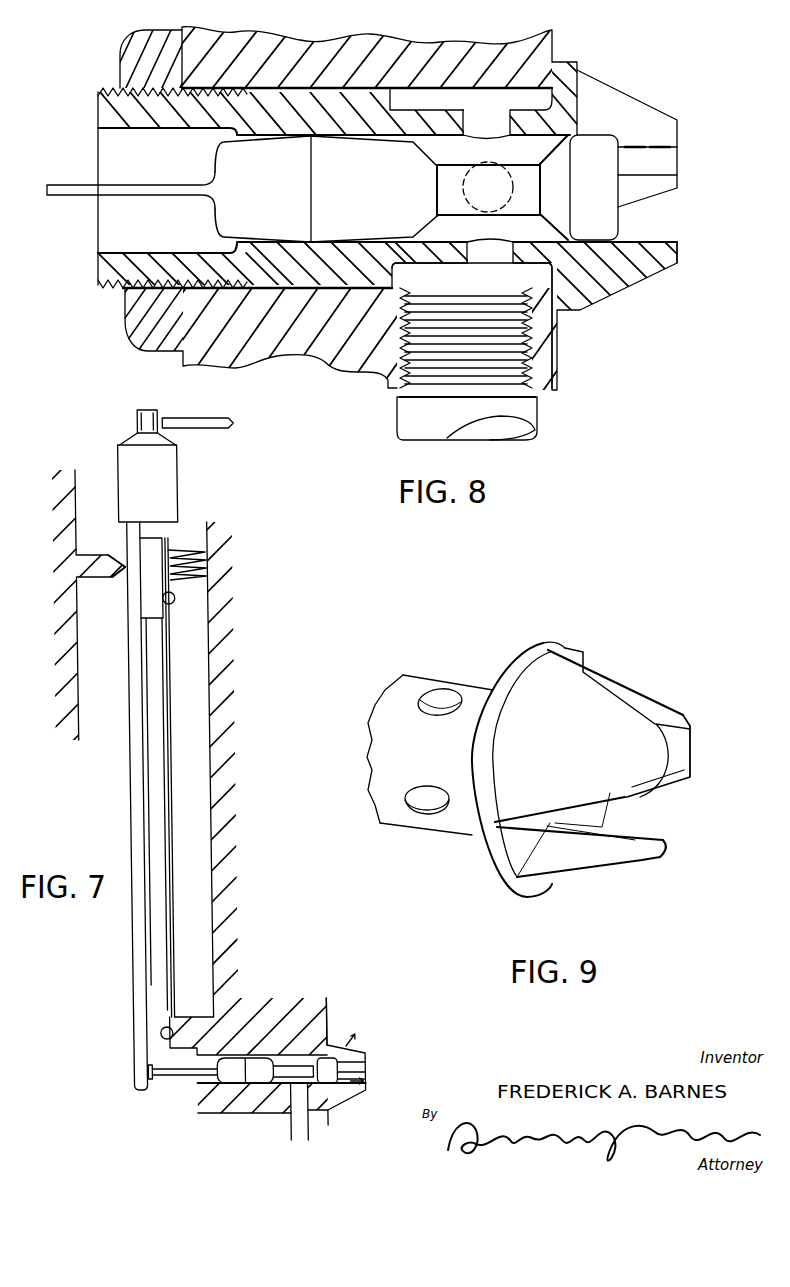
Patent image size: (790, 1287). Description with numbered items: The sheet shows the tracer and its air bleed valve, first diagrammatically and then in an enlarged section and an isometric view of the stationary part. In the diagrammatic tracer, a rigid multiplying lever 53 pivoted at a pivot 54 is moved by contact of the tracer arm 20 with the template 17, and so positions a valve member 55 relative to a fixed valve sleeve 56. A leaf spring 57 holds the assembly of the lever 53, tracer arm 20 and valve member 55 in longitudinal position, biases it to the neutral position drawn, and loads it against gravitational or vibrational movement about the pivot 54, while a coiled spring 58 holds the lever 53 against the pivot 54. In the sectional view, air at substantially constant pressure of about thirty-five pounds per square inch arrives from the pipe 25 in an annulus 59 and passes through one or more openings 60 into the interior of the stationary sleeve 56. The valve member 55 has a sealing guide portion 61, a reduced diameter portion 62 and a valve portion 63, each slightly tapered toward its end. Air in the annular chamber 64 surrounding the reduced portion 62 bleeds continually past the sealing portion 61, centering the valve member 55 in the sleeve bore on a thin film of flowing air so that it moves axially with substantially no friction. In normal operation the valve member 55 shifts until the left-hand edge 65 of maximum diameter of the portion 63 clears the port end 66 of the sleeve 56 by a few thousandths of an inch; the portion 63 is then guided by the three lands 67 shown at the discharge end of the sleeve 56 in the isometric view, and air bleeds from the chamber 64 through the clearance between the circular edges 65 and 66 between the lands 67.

In FIG. 7, the template 17 is at (218, 430).
In FIG. 7, the tracer arm 20 is at (139, 420).
In FIG. 8, the pipe 25 is at (537, 412).
In FIG. 7, the pipe 25 is at (296, 1132).
In FIG. 7, the multiplying lever 53 is at (127, 700).
In FIG. 7, the pivot 54 is at (127, 568).
In FIG. 8, the valve member 55 is at (73, 197).
In FIG. 7, the valve member 55 is at (182, 1076).
In FIG. 8, the valve sleeve 56 is at (98, 108).
In FIG. 7, the valve sleeve 56 is at (343, 1098).
In FIG. 9, the valve sleeve 56 is at (455, 683).
In FIG. 7, the leaf spring 57 is at (170, 836).
In FIG. 7, the coiled spring 58 is at (175, 597).
In FIG. 8, the annulus 59 is at (472, 324).
In FIG. 8, the openings 60 is at (488, 245).
In FIG. 9, the openings 60 is at (425, 797).
In FIG. 8, the sealing guide portion 61 is at (336, 199).
In FIG. 7, the sealing guide portion 61 is at (265, 1070).
In FIG. 8, the reduced diameter portion 62 is at (450, 163).
In FIG. 8, the valve portion 63 is at (581, 193).
In FIG. 7, the valve portion 63 is at (341, 1070).
In FIG. 8, the annular chamber 64 is at (516, 235).
In FIG. 8, the left-hand edge of maximum diameter 65 is at (570, 158).
In FIG. 8, the port end 66 is at (577, 124).
In FIG. 8, the lands 67 is at (650, 240).
In FIG. 9, the lands 67 is at (632, 842).